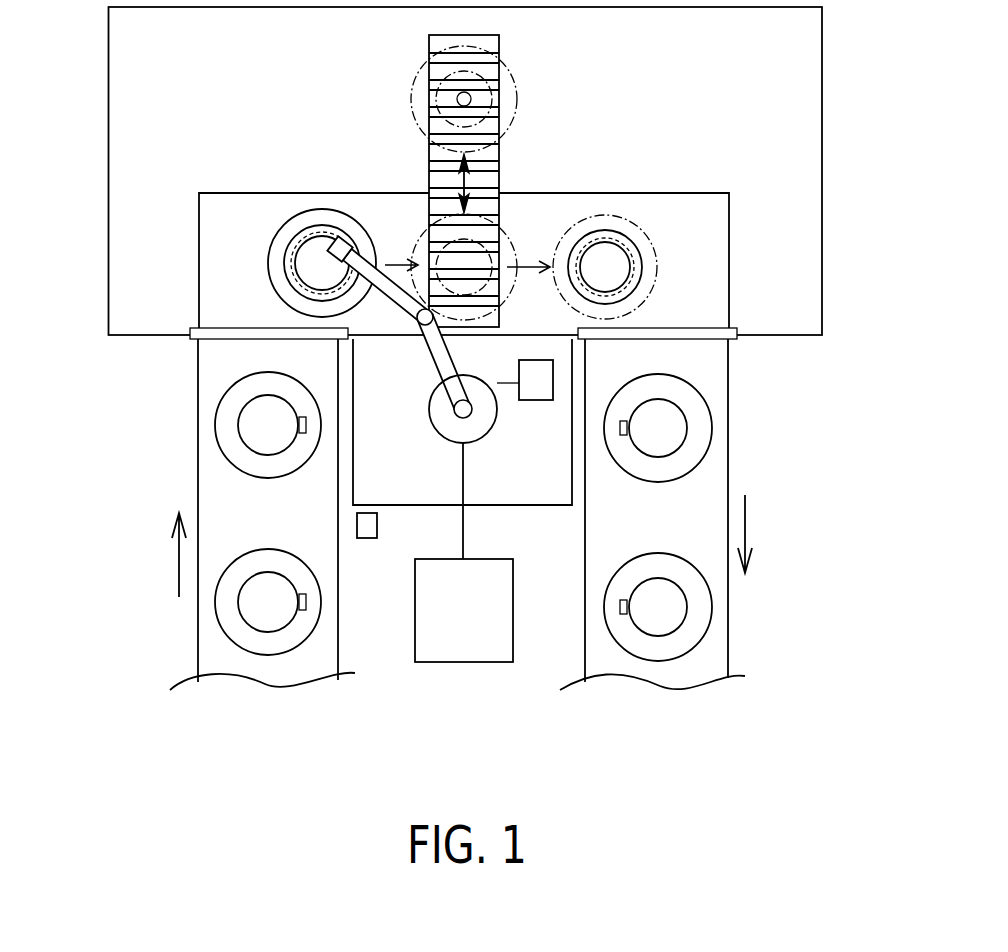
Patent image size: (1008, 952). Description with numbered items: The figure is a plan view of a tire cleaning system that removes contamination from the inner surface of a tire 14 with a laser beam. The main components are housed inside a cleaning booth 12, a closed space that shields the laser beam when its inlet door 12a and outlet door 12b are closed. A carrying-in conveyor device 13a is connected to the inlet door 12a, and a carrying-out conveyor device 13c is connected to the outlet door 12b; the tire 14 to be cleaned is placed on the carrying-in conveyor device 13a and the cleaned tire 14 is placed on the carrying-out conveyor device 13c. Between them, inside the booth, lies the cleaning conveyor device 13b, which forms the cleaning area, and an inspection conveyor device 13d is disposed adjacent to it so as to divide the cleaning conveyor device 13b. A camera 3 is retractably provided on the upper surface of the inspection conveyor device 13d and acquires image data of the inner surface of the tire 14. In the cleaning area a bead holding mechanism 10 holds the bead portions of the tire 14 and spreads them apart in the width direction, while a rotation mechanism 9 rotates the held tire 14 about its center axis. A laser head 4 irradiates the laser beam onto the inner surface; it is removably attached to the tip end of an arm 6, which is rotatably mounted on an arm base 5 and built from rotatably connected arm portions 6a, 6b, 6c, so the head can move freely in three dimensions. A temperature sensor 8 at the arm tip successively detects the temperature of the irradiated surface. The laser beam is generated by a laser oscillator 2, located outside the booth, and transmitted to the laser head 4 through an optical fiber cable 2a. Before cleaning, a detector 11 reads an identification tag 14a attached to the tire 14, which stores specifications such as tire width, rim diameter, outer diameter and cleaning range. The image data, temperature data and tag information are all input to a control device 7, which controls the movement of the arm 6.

The laser oscillator 2 is at (466, 648).
The optical fiber cable 2a is at (470, 475).
The camera 3 is at (458, 97).
The laser head 4 is at (308, 257).
The arm base 5 is at (453, 432).
The arm 6 is at (277, 345).
The arm portion 6a is at (332, 262).
The arm portion 6b is at (390, 297).
The arm portion 6c is at (437, 357).
The control device 7 is at (538, 400).
The temperature sensor 8 is at (351, 238).
The rotation mechanism 9 is at (314, 274).
The bead holding mechanism 10 is at (321, 232).
The detector 11 is at (367, 538).
The cleaning booth 12 is at (136, 344).
The inlet door 12a is at (222, 330).
The outlet door 12b is at (702, 330).
The carrying-in conveyor device 13a is at (210, 655).
The cleaning conveyor device 13b is at (222, 204).
The carrying-out conveyor device 13c is at (720, 377).
The inspection conveyor device 13d is at (494, 163).
The tire 14 is at (287, 221).
The identification tag 14a is at (304, 605).